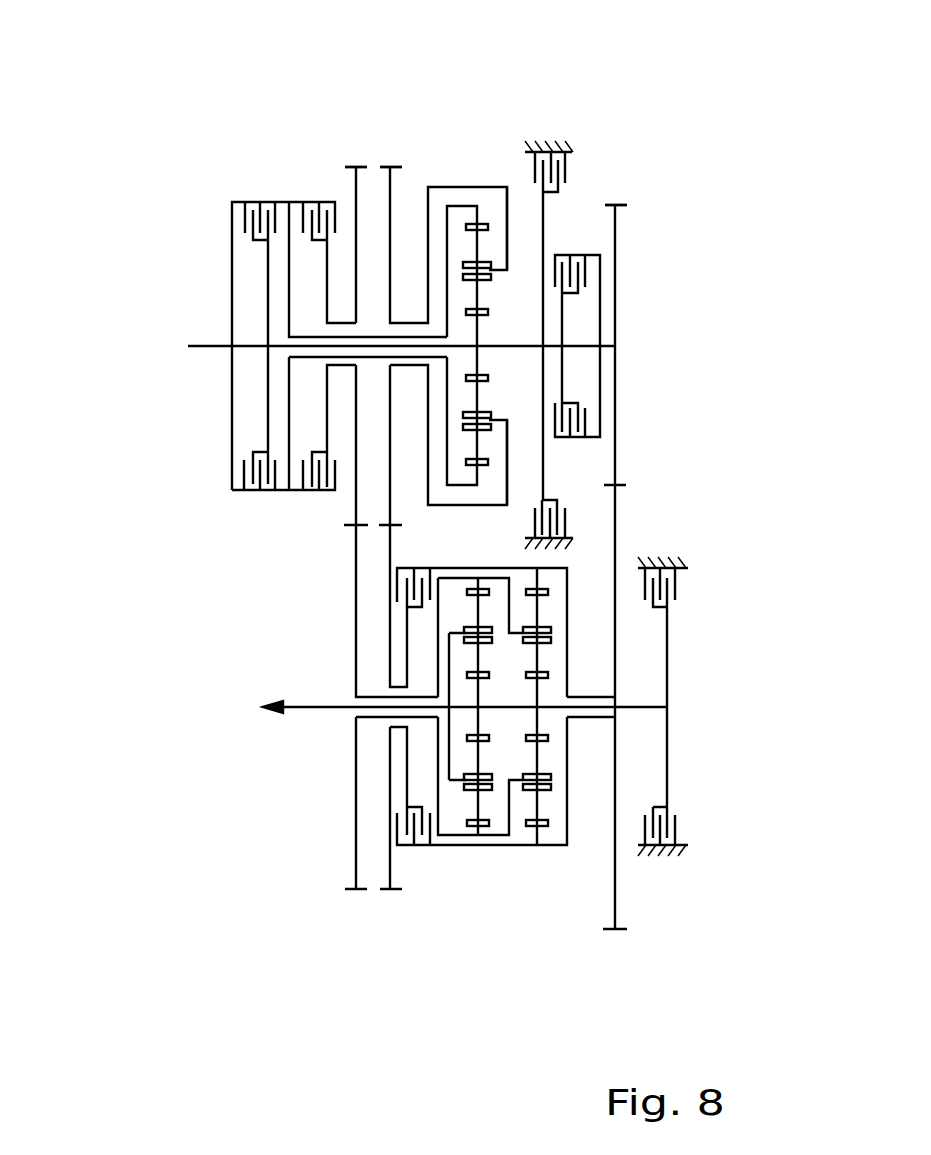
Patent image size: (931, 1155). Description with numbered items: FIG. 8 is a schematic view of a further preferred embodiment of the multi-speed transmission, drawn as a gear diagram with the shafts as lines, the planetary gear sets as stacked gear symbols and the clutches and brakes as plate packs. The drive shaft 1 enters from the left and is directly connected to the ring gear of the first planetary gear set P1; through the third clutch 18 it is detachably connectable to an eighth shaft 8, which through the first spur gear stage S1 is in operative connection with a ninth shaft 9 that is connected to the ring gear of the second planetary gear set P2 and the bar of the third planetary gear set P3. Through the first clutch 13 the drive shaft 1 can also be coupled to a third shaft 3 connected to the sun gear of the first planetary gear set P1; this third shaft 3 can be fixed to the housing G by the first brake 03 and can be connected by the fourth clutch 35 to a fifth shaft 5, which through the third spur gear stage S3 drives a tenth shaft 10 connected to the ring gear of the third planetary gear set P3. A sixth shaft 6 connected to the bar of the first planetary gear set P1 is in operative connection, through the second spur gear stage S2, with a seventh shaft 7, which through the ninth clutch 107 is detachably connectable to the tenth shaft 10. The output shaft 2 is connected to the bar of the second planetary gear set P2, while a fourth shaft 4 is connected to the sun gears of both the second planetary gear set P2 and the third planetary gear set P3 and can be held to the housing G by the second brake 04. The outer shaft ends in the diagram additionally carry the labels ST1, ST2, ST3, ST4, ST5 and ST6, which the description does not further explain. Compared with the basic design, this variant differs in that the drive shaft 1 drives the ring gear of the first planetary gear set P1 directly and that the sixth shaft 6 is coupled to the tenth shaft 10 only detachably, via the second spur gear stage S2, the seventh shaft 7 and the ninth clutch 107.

The drive shaft 1 is at (197, 344).
The output shaft 2 is at (310, 708).
The third shaft 3 is at (522, 342).
The fourth shaft 4 is at (642, 707).
The fifth shaft 5 is at (620, 368).
The sixth shaft 6 is at (508, 448).
The seventh shaft 7 is at (390, 640).
The eighth shaft 8 is at (353, 488).
The ninth shaft 9 is at (353, 535).
The tenth shaft 10 is at (618, 530).
The first clutch 13 is at (247, 223).
The third clutch 18 is at (298, 196).
The fourth clutch 35 is at (587, 275).
The ninth clutch 107 is at (397, 583).
The first brake 03 is at (577, 150).
The second brake 04 is at (672, 595).
The housing G is at (545, 140).
The first planetary gear set P1 is at (461, 165).
The second planetary gear set P2 is at (480, 884).
The third planetary gear set P3 is at (537, 884).
The first spur gear stage S1 is at (357, 145).
The second spur gear stage S2 is at (390, 145).
The third spur gear stage S3 is at (615, 178).
The shaft end ST1 is at (353, 165).
The shaft end ST2 is at (350, 893).
The shaft end ST3 is at (383, 165).
The shaft end ST4 is at (392, 893).
The shaft end ST5 is at (620, 202).
The shaft end ST6 is at (618, 935).